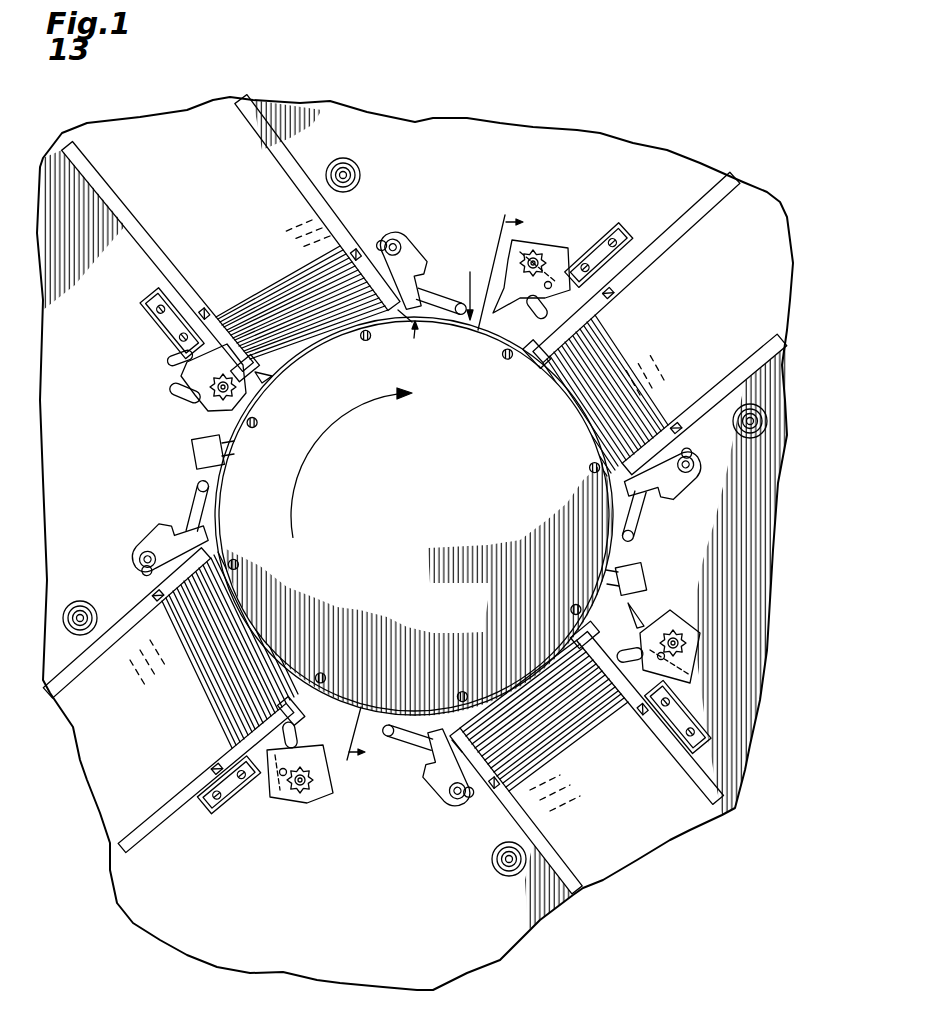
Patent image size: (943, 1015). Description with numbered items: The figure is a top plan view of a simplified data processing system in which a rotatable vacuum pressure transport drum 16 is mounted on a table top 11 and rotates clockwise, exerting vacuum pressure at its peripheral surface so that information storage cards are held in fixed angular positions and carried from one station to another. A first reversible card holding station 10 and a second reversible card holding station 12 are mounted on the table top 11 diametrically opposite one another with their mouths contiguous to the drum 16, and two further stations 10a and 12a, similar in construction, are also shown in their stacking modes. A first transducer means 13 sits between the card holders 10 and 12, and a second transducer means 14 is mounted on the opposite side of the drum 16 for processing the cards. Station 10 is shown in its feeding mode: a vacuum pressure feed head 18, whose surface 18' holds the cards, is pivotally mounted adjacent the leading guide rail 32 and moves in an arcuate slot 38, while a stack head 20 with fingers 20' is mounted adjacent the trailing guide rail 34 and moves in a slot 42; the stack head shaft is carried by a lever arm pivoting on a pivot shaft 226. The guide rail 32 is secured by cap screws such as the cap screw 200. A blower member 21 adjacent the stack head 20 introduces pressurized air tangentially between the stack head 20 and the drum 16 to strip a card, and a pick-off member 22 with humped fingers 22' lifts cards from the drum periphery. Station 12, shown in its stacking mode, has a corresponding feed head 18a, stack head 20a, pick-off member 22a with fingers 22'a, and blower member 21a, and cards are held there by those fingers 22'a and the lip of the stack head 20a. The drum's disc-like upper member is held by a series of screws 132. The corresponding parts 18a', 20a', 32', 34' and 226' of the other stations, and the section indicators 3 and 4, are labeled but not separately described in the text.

The section line 3- 3 is at (441, 497).
The section line 4- 4 is at (440, 302).
The first reversible card holding station 10 is at (198, 184).
The station 10a is at (706, 310).
The table top 11 is at (97, 410).
The second reversible card holding station 12 is at (630, 839).
The station 12a is at (161, 711).
The first transducer means 13 is at (646, 579).
The second transducer means 14 is at (194, 458).
The rotatable vacuum pressure transport drum 16 is at (430, 612).
The vacuum pressure feed head 18 is at (206, 388).
The surface of the feed head 18' is at (287, 380).
The feed head 18a is at (667, 643).
The pawl 18a' is at (660, 608).
The stack head 20 is at (405, 269).
The fingers of the stack head 20' is at (393, 343).
The stack head 20a is at (444, 768).
The lever tip 20a' is at (436, 760).
The blower member 21 is at (459, 306).
The blower member 21a is at (402, 736).
The pick-off member 22 is at (165, 323).
The fingers of the pick-off member 22' is at (265, 385).
The pick-off member 22a is at (660, 706).
The fingers of the pick-off 22'a is at (596, 634).
The guide rail 32 is at (158, 239).
The outer guide rail 32' is at (650, 723).
The guide rail 34 is at (317, 190).
The inner guide rail 34' is at (527, 811).
The arcuate slot 38 is at (180, 394).
The slot 42 is at (378, 245).
The screws 132 is at (258, 429).
The cap screw 200 is at (200, 315).
The pivot shaft 226 is at (359, 175).
The mounting bolt 226' is at (505, 871).